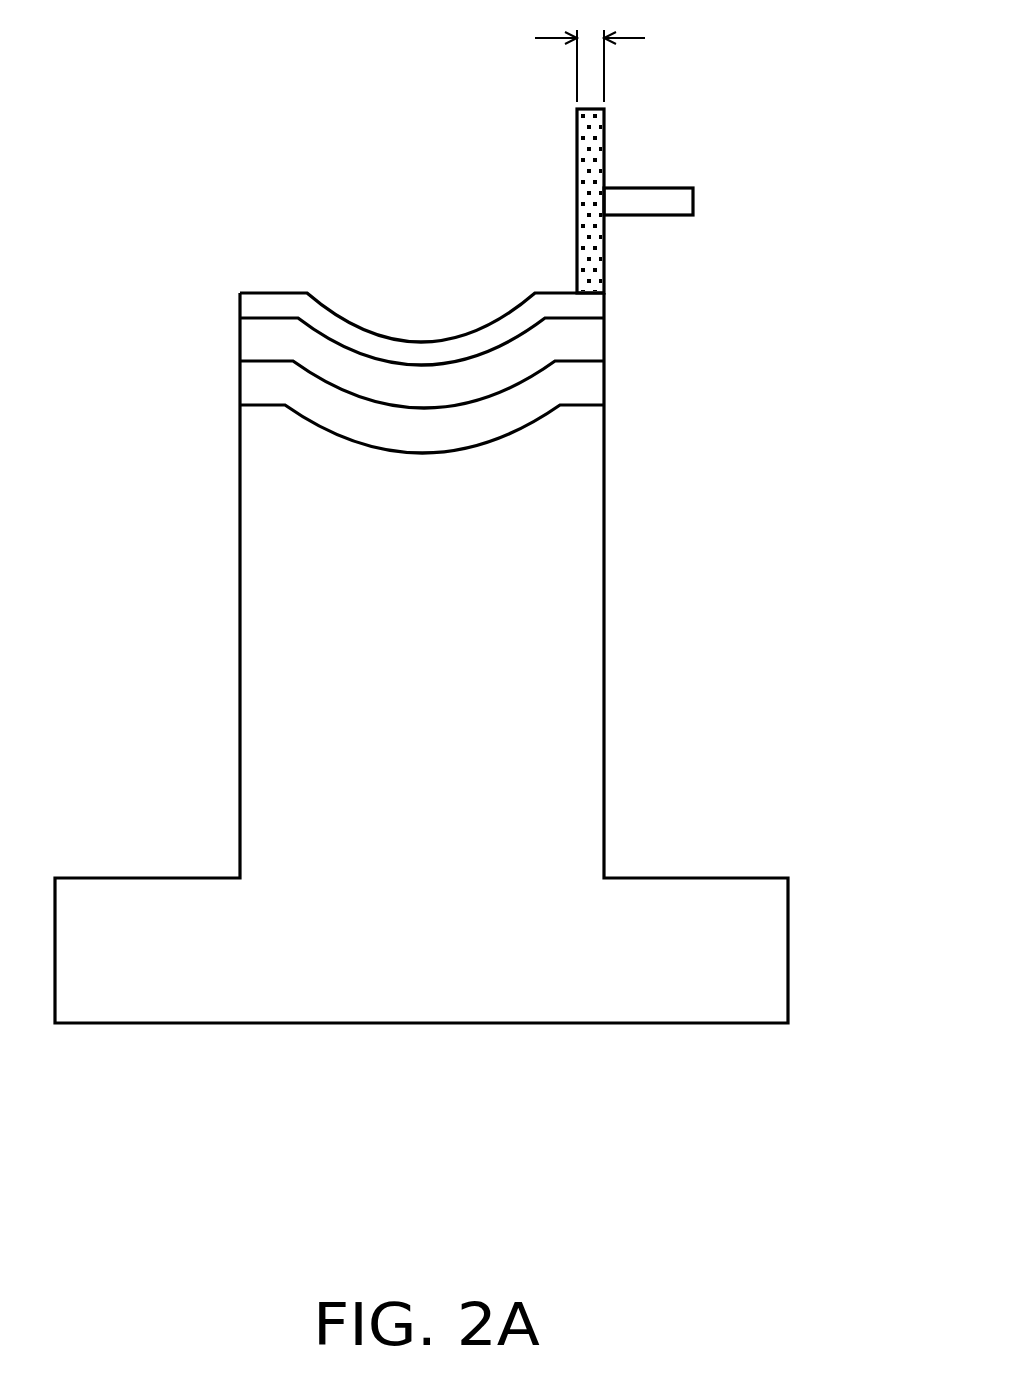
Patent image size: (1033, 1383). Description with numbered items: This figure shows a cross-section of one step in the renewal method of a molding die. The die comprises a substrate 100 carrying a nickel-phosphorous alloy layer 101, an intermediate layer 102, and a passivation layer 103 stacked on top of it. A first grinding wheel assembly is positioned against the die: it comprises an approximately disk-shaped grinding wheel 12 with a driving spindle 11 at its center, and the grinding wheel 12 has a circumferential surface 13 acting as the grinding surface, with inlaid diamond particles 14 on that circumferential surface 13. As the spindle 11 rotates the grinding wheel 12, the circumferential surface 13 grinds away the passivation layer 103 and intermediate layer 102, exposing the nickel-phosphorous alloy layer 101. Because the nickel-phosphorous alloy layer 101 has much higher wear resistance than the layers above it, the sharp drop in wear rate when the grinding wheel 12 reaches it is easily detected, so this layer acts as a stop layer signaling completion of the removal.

The substrate 100 is at (587, 580).
The nickel-phosphorous alloy layer 101 is at (587, 385).
The intermediate layer 102 is at (587, 342).
The passivation layer 103 is at (587, 308).
The driving spindle 11 is at (680, 203).
The grinding wheel 12 is at (604, 118).
The circumferential surface 13 is at (590, 51).
The diamond particles 14 is at (590, 154).